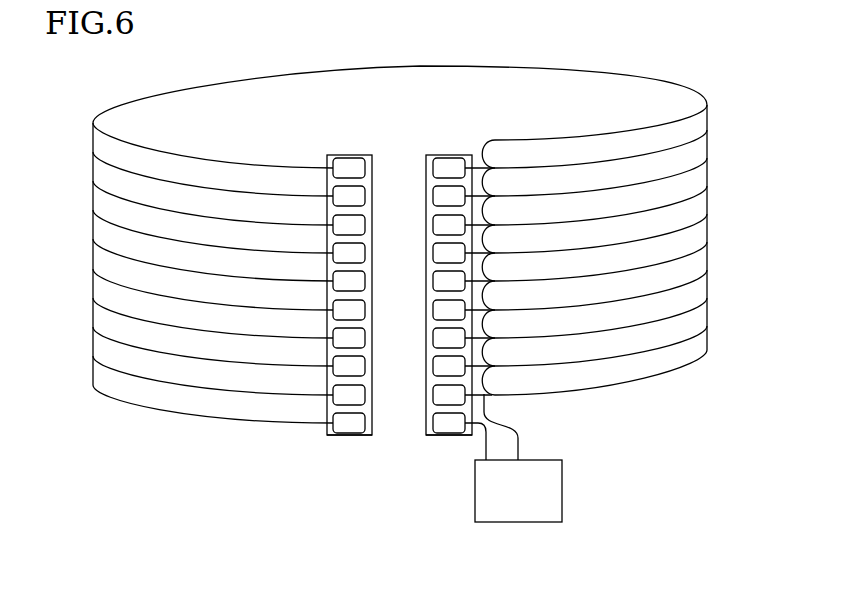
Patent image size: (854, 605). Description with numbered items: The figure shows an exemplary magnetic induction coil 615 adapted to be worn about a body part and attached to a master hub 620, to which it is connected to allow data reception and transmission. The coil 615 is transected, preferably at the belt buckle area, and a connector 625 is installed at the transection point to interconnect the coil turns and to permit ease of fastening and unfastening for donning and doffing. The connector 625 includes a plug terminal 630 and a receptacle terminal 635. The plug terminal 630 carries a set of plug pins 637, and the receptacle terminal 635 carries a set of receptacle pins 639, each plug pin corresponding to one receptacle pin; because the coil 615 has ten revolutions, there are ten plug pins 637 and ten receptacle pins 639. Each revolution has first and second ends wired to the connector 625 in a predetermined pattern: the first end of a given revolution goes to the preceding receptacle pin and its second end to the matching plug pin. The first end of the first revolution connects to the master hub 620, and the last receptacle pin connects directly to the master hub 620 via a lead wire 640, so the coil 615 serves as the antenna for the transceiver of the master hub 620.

The magnetic induction coil 615 is at (669, 82).
The master hub 620 is at (563, 487).
The connector 625 is at (427, 157).
The plug terminal 630 is at (348, 155).
The receptacle terminal 635 is at (447, 155).
The plug pins 637 is at (350, 437).
The receptacle pins 639 is at (445, 437).
The lead wire 640 is at (488, 446).